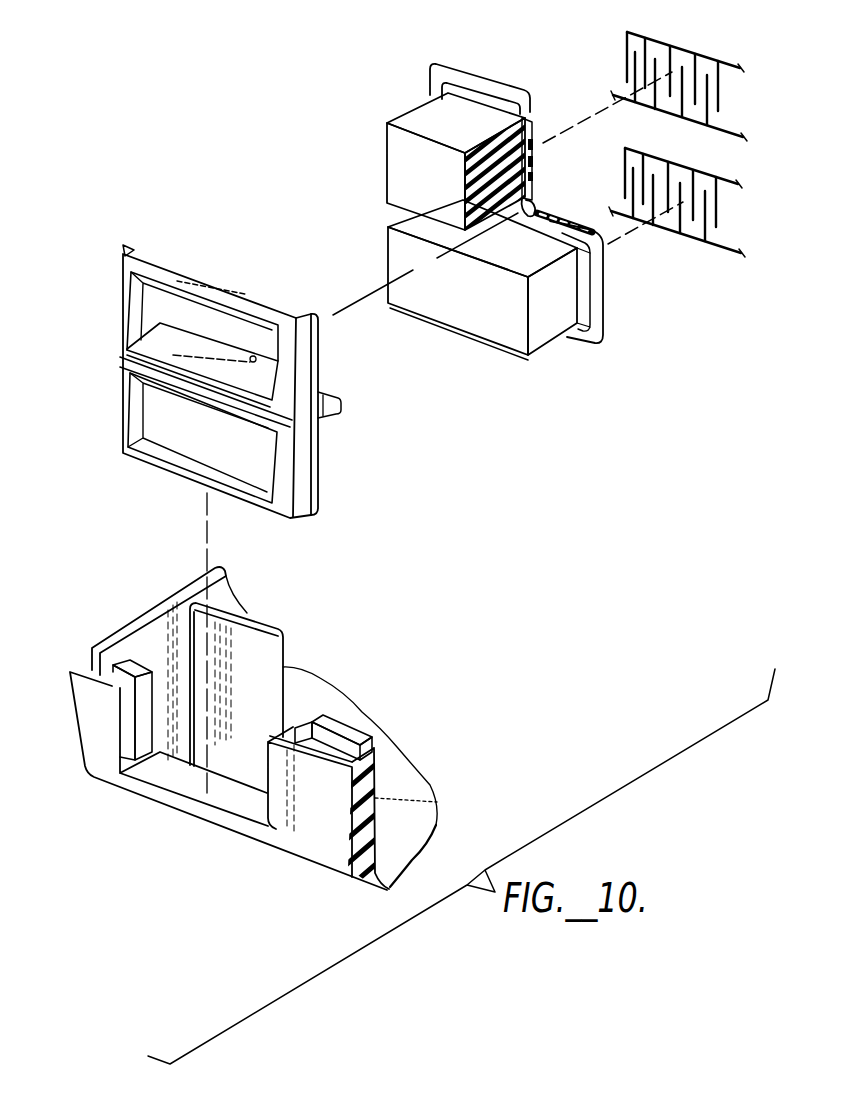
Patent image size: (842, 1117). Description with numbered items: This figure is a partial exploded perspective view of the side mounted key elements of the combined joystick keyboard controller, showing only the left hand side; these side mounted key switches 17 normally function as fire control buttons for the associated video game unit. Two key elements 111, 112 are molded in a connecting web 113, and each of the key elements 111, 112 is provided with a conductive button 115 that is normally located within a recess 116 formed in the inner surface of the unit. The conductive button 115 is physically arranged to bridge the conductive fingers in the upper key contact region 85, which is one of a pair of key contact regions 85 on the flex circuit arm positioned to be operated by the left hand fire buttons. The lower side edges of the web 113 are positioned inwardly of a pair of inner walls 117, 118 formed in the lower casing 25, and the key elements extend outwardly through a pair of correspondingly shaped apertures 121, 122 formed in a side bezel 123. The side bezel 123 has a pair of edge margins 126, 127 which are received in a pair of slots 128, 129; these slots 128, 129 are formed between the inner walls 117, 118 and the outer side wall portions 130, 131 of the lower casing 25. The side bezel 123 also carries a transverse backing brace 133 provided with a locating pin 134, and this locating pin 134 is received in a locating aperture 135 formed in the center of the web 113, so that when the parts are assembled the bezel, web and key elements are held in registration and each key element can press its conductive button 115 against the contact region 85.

The side mounted key switches 17 is at (350, 135).
The lower casing 25 is at (212, 827).
The key contact regions 85 is at (660, 50).
The key element 111 is at (422, 123).
The key element 112 is at (500, 330).
The connecting web 113 is at (596, 335).
The conductive button 115 is at (543, 142).
The recess 116 is at (512, 100).
The inner wall 117 is at (128, 663).
The inner wall 118 is at (296, 725).
The aperture 121 is at (137, 315).
The aperture 122 is at (140, 412).
The side bezel 123 is at (176, 272).
The edge margin 126 is at (124, 248).
The edge margin 127 is at (302, 388).
The slot 128 is at (98, 656).
The slot 129 is at (343, 743).
The outer side wall portion 130 is at (103, 730).
The outer side wall portion 131 is at (327, 810).
The transverse backing brace 133 is at (179, 312).
The locating pin 134 is at (257, 356).
The locating aperture 135 is at (535, 210).